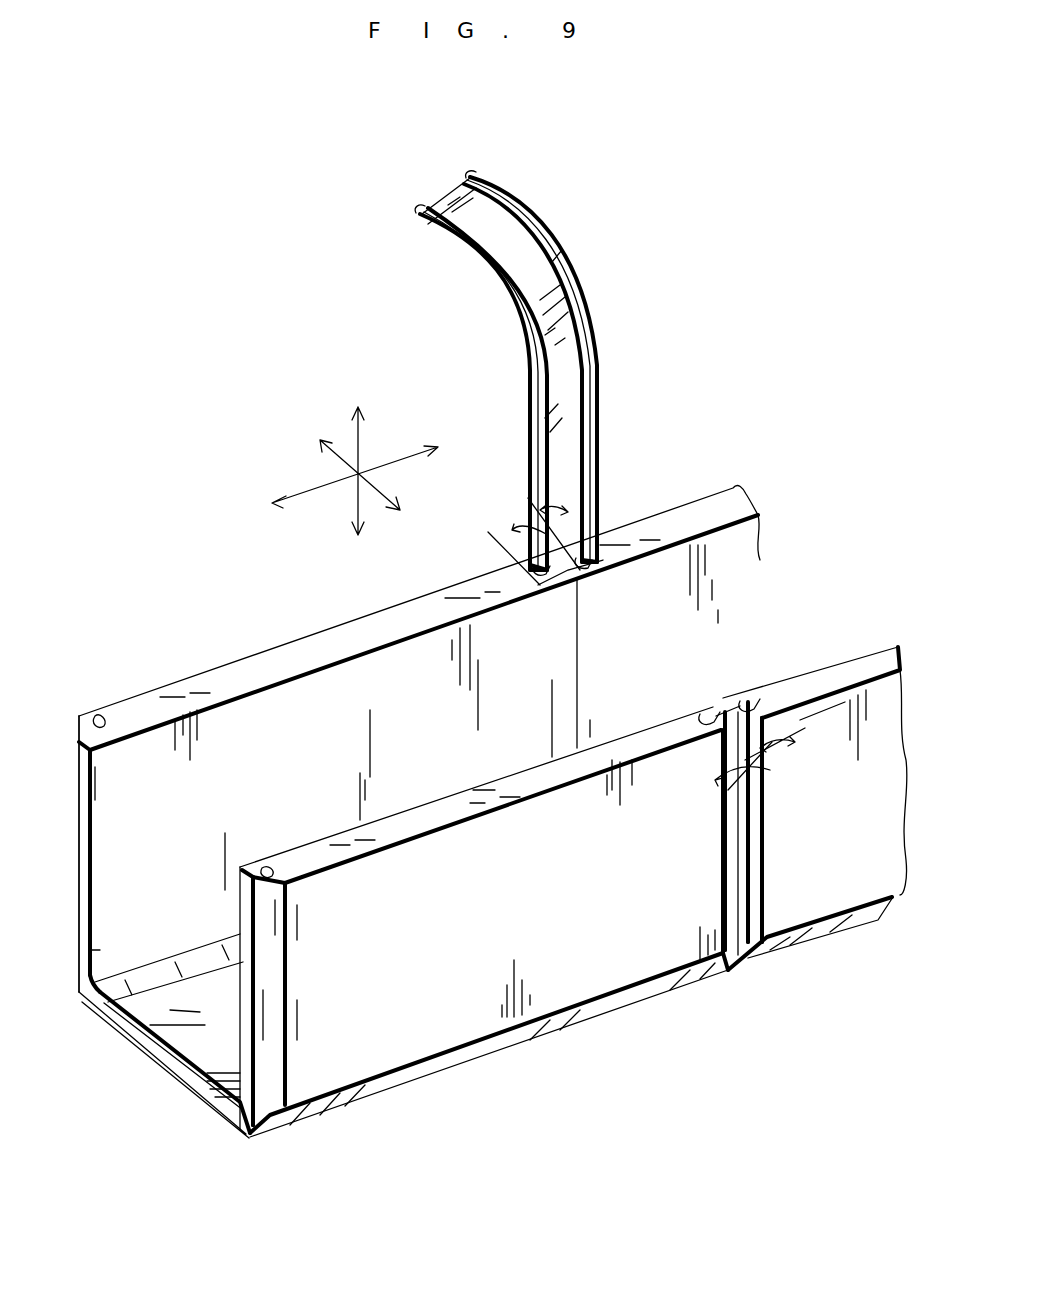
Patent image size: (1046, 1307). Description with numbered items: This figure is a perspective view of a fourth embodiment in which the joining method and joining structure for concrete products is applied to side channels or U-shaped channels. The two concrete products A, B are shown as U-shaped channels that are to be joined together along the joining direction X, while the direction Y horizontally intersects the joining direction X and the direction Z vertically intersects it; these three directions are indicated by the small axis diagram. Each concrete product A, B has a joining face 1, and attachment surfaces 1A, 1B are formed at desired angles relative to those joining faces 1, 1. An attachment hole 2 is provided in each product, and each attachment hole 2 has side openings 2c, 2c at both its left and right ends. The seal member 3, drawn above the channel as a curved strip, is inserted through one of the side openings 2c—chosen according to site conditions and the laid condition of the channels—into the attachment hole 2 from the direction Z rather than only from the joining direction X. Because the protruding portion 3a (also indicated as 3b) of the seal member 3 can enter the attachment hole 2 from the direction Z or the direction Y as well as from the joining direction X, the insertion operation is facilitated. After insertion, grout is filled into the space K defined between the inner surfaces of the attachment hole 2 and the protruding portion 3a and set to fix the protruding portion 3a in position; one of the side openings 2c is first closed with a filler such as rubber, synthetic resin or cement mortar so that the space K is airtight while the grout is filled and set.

The joining face 1 is at (92, 822).
The attachment surface 1A is at (100, 870).
The attachment surface 1B is at (752, 888).
The attachment hole 2 is at (94, 715).
The side opening 2c is at (104, 712).
The seal member 3 is at (567, 415).
The protruding portion 3a is at (530, 418).
The other edge face of curved plate 3b is at (595, 418).
The space K is at (548, 585).
The concrete product A is at (330, 638).
The concrete product B is at (724, 505).
The joining direction X is at (395, 455).
The horizontal intersecting direction Y is at (385, 492).
The vertical intersecting direction Z is at (360, 440).